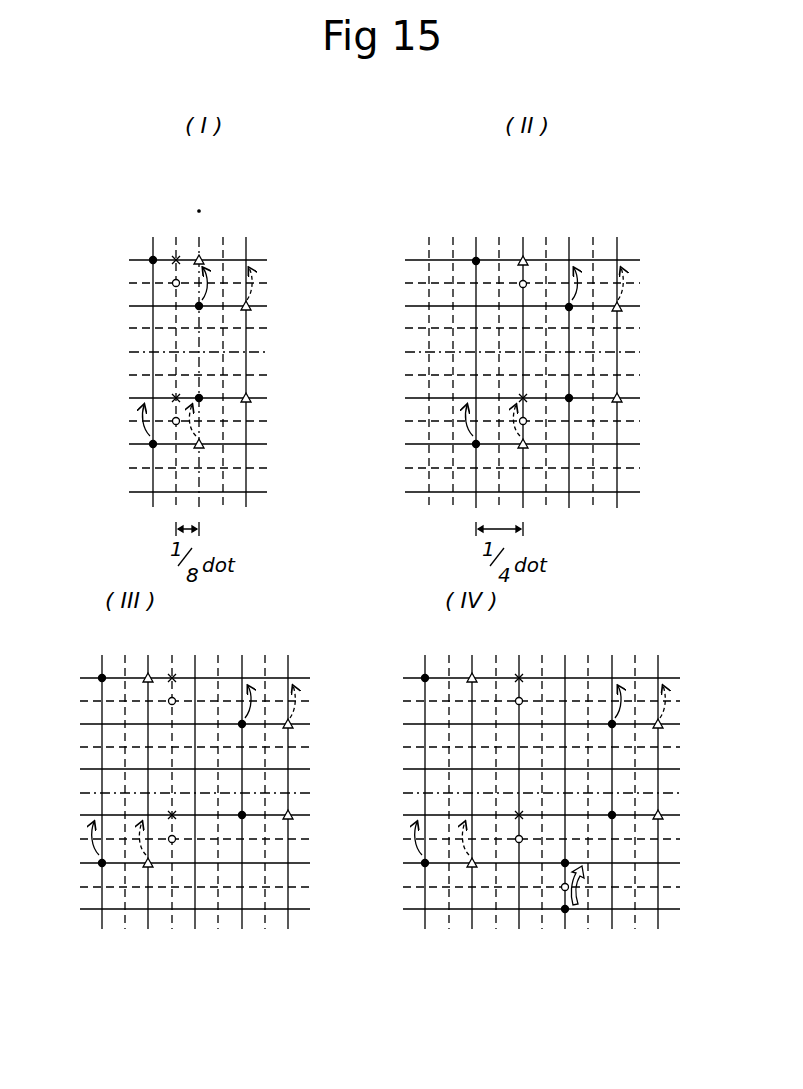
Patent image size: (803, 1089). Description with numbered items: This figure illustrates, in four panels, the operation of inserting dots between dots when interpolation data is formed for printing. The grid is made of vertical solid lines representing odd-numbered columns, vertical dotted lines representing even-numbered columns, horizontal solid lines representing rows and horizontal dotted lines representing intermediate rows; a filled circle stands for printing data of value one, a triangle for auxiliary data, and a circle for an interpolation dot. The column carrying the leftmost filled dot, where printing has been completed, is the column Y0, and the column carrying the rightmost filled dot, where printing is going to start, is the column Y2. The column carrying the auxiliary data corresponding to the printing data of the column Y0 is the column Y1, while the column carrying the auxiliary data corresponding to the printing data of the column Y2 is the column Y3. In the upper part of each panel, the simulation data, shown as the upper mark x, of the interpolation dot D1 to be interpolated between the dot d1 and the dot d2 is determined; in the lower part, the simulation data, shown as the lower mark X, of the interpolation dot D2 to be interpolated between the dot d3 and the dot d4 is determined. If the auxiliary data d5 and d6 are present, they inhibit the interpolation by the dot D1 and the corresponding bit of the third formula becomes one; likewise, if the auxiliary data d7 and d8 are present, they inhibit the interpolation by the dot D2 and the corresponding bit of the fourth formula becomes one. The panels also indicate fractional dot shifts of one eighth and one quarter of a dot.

The dot d1 is at (425, 678).
The dot d2 is at (690, 756).
The dot d3 is at (425, 864).
The dot d4 is at (692, 800).
The auxiliary data d5 is at (470, 676).
The auxiliary data d6 is at (692, 713).
The auxiliary data d7 is at (470, 866).
The auxiliary data d8 is at (692, 840).
The interpolation dot D1 is at (521, 698).
The interpolation dot D2 is at (518, 842).
The column Y0 is at (291, 573).
The column Y1 is at (338, 555).
The column Y2 is at (409, 573).
The column Y3 is at (455, 573).